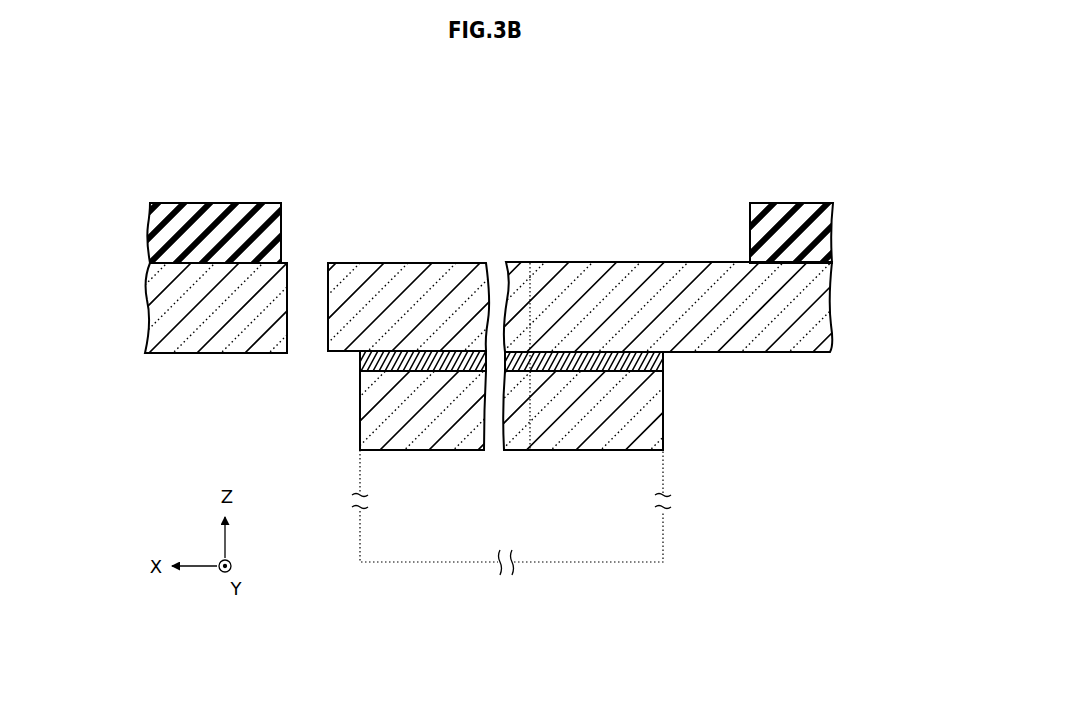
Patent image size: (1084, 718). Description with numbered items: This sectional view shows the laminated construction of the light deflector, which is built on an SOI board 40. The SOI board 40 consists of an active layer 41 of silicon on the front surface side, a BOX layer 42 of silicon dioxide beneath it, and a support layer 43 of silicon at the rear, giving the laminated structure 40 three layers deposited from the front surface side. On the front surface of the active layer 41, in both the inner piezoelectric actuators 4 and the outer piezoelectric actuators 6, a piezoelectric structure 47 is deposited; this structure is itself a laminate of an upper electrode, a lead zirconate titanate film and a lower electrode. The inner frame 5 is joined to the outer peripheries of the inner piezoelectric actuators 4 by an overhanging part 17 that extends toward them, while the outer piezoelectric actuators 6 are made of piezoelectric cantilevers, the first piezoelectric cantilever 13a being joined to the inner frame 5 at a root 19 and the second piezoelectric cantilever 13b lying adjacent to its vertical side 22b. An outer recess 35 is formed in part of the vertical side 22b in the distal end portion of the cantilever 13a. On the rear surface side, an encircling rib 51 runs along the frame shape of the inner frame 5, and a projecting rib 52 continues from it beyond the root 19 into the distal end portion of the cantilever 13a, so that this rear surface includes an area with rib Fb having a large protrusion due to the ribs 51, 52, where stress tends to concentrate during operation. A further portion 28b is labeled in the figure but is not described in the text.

The inner piezoelectric actuators 4 is at (793, 189).
The inner frame 5 is at (618, 238).
The outer piezoelectric actuators 6 is at (294, 141).
The first piezoelectric cantilever 13a is at (407, 240).
The second piezoelectric cantilever 13b is at (222, 190).
The overhanging part 17 is at (724, 262).
The root 19 is at (540, 262).
The vertical side 22b is at (326, 281).
The lower surface 28b is at (370, 435).
The outer recess 35 is at (325, 328).
The SOI board 40 is at (878, 358).
The active layer 41 is at (150, 318).
The BOX layer 42 is at (665, 360).
The support layer 43 is at (655, 425).
The piezoelectric structure 47 is at (156, 228).
The encircling rib 51 is at (610, 452).
The projecting rib 52 is at (427, 450).
The area with rib Fb is at (565, 450).